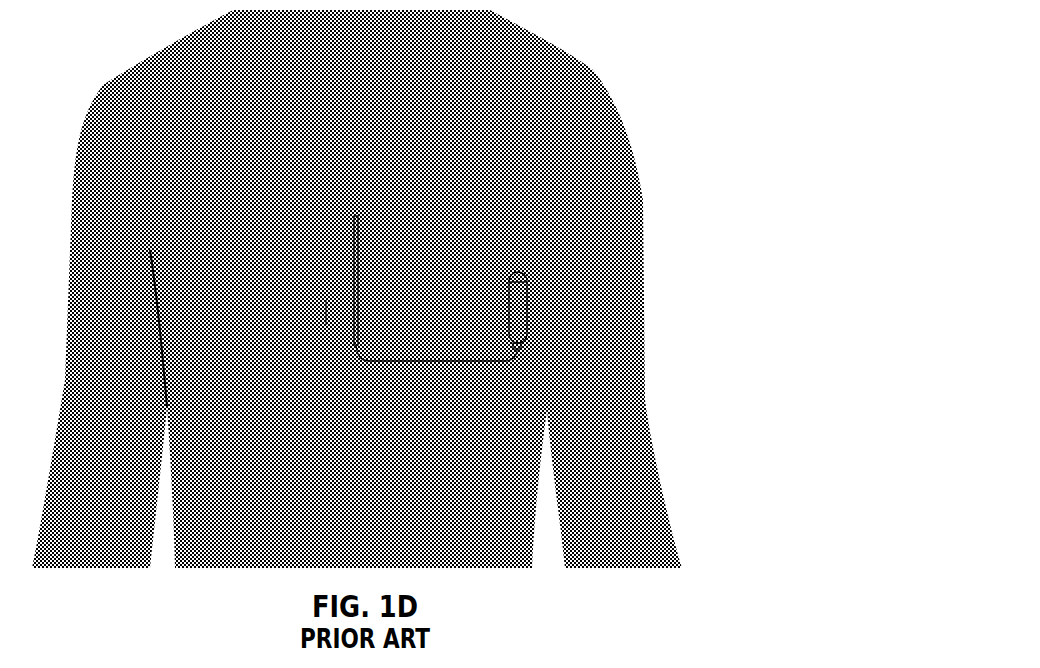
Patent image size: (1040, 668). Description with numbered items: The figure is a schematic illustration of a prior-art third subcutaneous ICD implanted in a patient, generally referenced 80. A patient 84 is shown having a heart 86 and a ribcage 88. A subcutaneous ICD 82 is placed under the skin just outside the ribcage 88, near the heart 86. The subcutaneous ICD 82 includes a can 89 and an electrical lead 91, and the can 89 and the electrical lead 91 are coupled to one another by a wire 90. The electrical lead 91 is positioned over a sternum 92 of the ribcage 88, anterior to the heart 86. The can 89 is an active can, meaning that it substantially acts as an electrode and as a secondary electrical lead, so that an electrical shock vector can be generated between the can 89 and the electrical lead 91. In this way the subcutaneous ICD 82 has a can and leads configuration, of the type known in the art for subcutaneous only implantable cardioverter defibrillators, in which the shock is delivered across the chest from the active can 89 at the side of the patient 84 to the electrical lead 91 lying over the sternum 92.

The third subcutaneous ICD implanted in a patient 80 is at (391, 289).
The subcutaneous ICD 82 is at (527, 310).
The patient 84 is at (662, 301).
The heart 86 is at (326, 325).
The ribcage 88 is at (207, 335).
The can 89 is at (513, 330).
The wire 90 is at (410, 310).
The electrical lead 91 is at (450, 365).
The sternum 92 is at (368, 250).